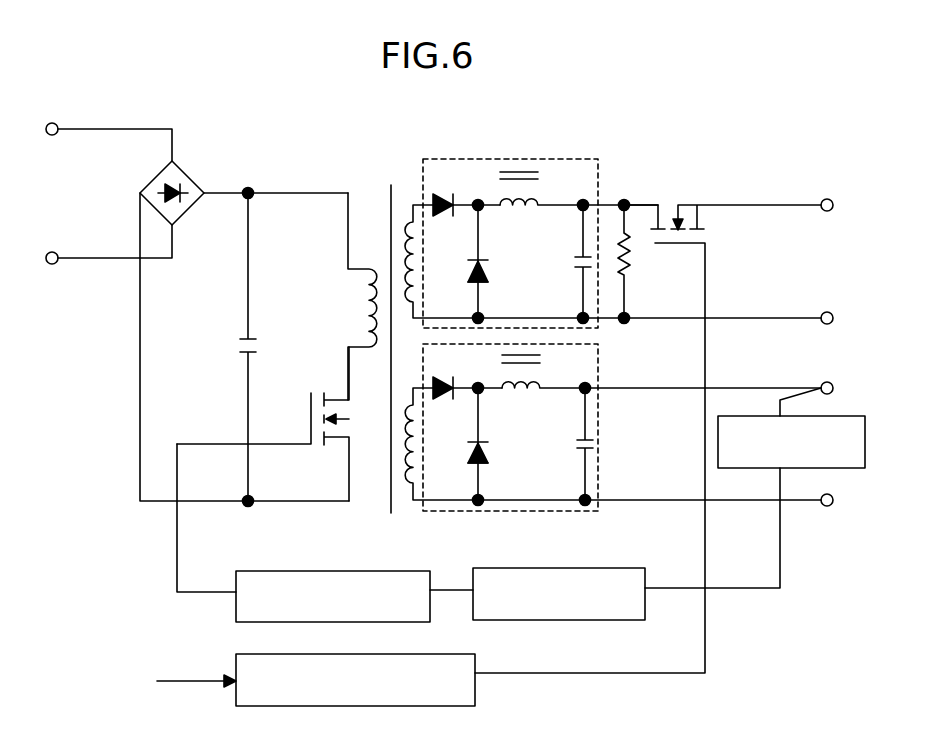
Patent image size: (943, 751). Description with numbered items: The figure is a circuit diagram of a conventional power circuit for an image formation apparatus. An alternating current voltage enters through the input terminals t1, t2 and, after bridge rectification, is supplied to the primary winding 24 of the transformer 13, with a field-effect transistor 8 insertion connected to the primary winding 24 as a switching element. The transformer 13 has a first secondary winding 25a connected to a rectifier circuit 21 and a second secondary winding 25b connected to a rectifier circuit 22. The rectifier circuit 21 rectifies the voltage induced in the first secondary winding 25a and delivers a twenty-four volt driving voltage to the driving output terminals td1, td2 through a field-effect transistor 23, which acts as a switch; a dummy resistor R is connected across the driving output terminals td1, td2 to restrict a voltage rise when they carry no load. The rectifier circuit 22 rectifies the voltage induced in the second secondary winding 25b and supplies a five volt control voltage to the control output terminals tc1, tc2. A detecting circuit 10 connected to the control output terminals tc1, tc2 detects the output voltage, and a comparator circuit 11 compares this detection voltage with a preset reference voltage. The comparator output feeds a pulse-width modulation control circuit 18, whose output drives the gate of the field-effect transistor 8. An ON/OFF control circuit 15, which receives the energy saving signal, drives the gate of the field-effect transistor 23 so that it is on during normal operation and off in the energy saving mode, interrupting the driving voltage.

The transformer 13 is at (376, 212).
The primary winding 24 is at (362, 316).
The first secondary winding 25a is at (408, 203).
The second secondary winding 25b is at (407, 485).
The rectifier circuit 21 is at (583, 163).
The rectifier circuit 22 is at (590, 357).
The field-effect transistor 23 is at (668, 210).
The dummy resistor R is at (633, 265).
The field-effect transistor 8 is at (311, 410).
The detecting circuit 10 is at (855, 416).
The comparator circuit 11 is at (575, 620).
The ON/OFF control circuit 15 is at (372, 706).
The pulse-width modulation control circuit 18 is at (378, 572).
The input terminal t1 is at (107, 129).
The input terminal t2 is at (107, 244).
The driving output terminal td1 is at (826, 191).
The driving output terminal td2 is at (731, 304).
The control output terminal tc1 is at (827, 374).
The control output terminal tc2 is at (827, 510).